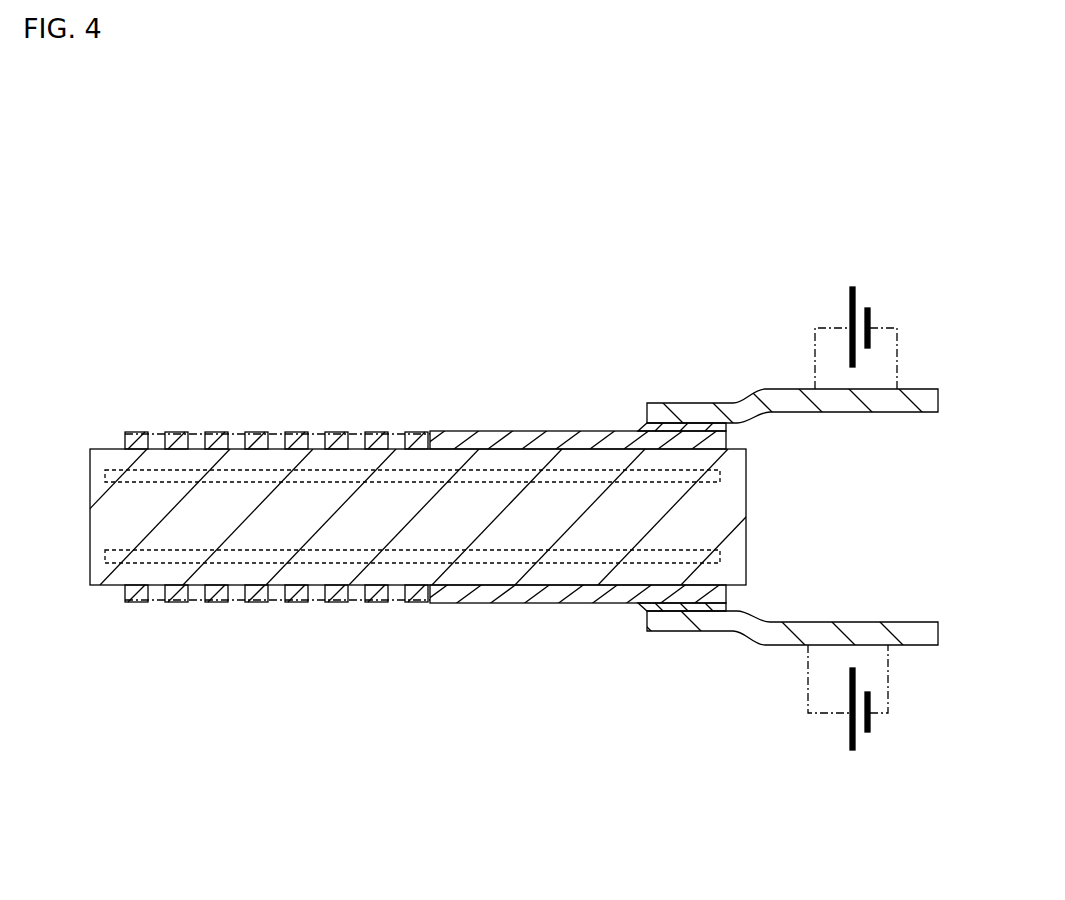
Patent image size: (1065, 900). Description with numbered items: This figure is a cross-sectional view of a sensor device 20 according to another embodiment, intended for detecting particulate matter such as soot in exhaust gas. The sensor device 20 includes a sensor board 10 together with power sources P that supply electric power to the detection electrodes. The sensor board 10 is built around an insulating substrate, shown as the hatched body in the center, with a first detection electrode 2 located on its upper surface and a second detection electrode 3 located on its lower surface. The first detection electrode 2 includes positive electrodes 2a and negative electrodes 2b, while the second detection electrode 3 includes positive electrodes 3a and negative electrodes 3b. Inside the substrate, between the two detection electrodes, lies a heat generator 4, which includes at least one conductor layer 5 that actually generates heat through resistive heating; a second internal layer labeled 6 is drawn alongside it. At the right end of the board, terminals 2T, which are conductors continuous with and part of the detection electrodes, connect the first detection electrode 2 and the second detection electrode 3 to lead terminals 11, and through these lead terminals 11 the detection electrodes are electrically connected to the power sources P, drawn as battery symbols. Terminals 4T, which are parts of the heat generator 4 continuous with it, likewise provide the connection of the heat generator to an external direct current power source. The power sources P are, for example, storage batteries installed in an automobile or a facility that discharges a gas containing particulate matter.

The sensor board 10 is at (102, 422).
The sensor device 20 is at (662, 322).
The first detection electrode 2 is at (440, 384).
The positive electrodes 2a is at (418, 432).
The negative electrodes 2b is at (372, 432).
The second detection electrode 3 is at (440, 657).
The positive electrodes 3a is at (420, 603).
The negative electrodes 3b is at (372, 603).
The heat generator 4 is at (412, 601).
The conductor layer 5 is at (155, 556).
The second internal electrode 6 is at (598, 553).
The terminals 2T is at (645, 428).
The terminals 4T is at (702, 402).
The lead terminals 11 is at (860, 397).
The power sources P is at (855, 288).